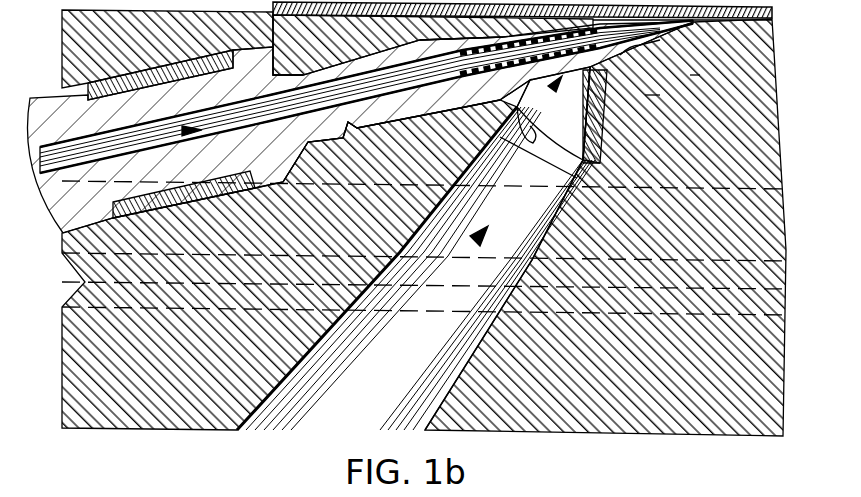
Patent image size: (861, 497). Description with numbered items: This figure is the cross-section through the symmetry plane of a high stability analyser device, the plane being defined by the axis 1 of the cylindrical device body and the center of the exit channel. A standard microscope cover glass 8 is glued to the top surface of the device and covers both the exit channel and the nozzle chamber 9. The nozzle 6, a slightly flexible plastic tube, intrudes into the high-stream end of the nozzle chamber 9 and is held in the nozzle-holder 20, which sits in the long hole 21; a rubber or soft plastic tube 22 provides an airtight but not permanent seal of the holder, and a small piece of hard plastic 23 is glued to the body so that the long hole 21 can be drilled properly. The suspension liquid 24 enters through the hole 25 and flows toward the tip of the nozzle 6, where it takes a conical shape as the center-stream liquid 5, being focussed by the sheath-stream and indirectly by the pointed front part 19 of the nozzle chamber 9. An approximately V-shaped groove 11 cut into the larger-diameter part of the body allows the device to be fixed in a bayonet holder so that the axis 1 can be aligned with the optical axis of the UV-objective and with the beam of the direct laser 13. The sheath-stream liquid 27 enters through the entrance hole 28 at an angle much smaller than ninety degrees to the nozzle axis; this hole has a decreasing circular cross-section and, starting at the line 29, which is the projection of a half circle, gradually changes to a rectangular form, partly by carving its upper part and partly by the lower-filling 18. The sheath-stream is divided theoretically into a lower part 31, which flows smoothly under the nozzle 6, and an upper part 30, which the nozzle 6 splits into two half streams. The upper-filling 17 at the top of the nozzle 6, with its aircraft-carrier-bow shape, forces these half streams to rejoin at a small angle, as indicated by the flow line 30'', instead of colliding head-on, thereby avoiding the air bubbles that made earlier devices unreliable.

The axis 1 is at (700, 22).
The center-stream liquid 5 is at (655, 55).
The nozzle 6 is at (636, 62).
The cover glass 8 is at (367, 21).
The nozzle chamber 9 is at (656, 108).
The V-shaped groove 11 is at (76, 271).
The direct laser 13 is at (685, 31).
The upper-filling 17 is at (440, 14).
The lower-filling 18 is at (598, 148).
The front part 19 is at (703, 89).
The nozzle-holder 20 is at (278, 72).
The long hole 21 is at (322, 143).
The rubber or soft plastic tube 22 is at (196, 212).
The hard plastic piece 23 is at (93, 32).
The suspension liquid 24 is at (166, 131).
The hole 25 is at (63, 163).
The sheath-stream liquid 27 is at (437, 297).
The entrance hole 28 is at (425, 410).
The line 29 is at (520, 143).
The upper part of the sheath-stream 30 is at (545, 122).
The flow line 30'' is at (617, 116).
The lower part of the sheath-stream 31 is at (554, 84).